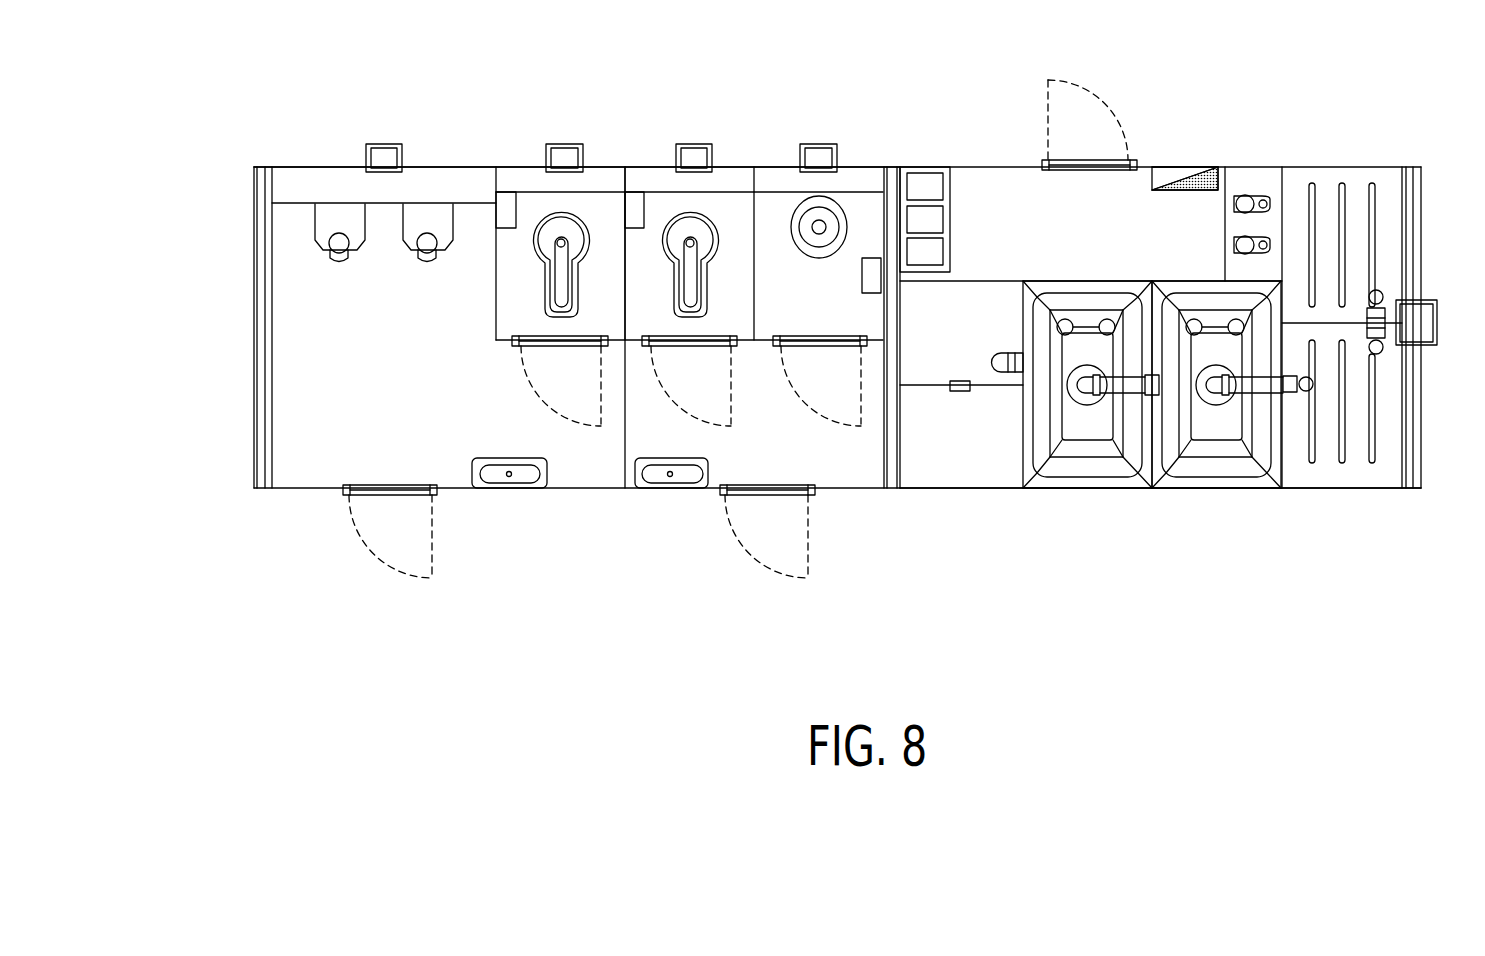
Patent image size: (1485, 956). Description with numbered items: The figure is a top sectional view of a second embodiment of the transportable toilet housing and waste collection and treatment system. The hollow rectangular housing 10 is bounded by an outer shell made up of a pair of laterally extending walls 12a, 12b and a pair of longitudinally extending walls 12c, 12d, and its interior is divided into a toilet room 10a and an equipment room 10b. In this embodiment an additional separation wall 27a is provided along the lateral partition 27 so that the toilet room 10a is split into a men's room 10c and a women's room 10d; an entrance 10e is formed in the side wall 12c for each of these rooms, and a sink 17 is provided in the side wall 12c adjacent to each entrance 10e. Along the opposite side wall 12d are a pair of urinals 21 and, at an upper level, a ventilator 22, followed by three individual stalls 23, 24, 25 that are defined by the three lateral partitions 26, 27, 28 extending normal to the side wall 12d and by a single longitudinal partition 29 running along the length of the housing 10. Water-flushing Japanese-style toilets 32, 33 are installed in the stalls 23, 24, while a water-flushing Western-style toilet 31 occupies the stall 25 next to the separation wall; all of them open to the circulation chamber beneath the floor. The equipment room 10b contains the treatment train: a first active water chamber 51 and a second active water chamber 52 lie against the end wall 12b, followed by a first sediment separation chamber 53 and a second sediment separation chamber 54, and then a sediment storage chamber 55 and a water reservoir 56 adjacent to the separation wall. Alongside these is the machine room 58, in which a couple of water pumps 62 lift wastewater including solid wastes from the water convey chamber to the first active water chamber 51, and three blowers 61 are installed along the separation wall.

The housing 10 is at (1372, 162).
The toilet room 10a is at (296, 342).
The equipment room 10b is at (1142, 196).
The men's room 10c is at (303, 462).
The women's room 10d is at (842, 460).
The entrance 10e is at (388, 498).
The laterally extending wall 12a is at (255, 193).
The laterally extending wall 12b is at (1418, 260).
The longitudinally extending wall 12c is at (1343, 488).
The longitudinally extending wall 12d is at (317, 167).
The sink 17 is at (500, 480).
The urinals 21 is at (335, 263).
The ventilator 22 is at (384, 150).
The individual stall 23 is at (598, 202).
The individual stall 24 is at (735, 202).
The individual stall 25 is at (858, 202).
The lateral partition 26 is at (495, 289).
The lateral partition 27 is at (623, 283).
The additional separation wall 27a is at (623, 460).
The lateral partition 28 is at (752, 283).
The longitudinal partition 29 is at (763, 347).
The Western-style toilet 31 is at (812, 242).
The Japanese-style toilet 32 is at (684, 275).
The Japanese-style toilet 33 is at (555, 275).
The first active water chamber 51 is at (1390, 197).
The second active water chamber 52 is at (1390, 413).
The first sediment separation chamber 53 is at (1218, 483).
The second sediment separation chamber 54 is at (1087, 483).
The sediment storage chamber 55 is at (952, 475).
The water reservoir 56 is at (1005, 290).
The machine room 58 is at (1032, 173).
The blowers 61 is at (937, 186).
The water pumps 62 is at (1256, 240).